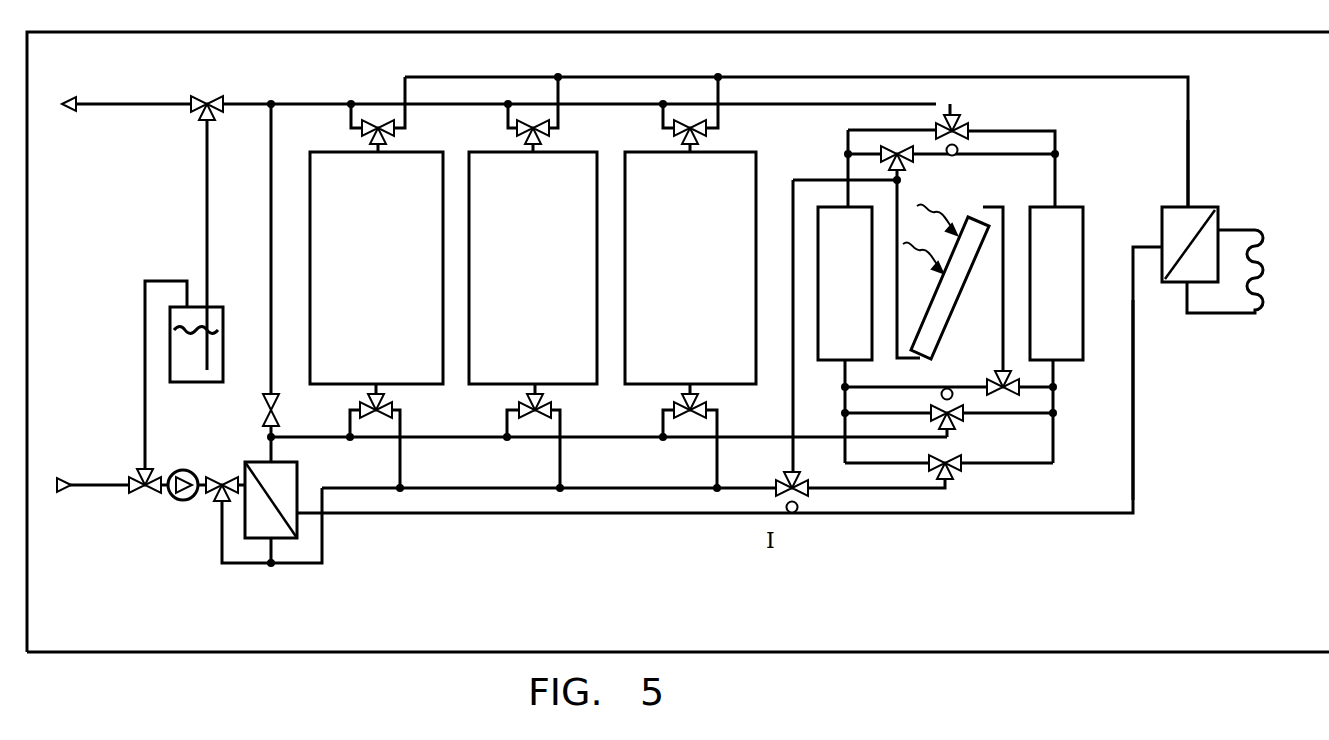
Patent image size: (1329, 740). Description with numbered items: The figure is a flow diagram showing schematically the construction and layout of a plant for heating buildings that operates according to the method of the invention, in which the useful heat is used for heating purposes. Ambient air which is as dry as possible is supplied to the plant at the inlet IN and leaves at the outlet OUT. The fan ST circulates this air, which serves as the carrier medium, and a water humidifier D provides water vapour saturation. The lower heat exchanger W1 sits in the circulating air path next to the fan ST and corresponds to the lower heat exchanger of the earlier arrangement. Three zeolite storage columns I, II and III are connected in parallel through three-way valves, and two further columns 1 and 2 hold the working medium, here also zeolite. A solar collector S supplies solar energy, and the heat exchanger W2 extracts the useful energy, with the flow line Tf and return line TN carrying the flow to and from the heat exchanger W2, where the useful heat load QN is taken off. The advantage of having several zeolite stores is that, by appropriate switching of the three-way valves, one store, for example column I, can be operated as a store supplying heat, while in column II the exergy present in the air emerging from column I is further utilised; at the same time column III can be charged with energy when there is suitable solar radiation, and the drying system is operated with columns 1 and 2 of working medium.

The air outlet OUT is at (100, 114).
The air inlet IN is at (81, 497).
The zeolite storage column I is at (376, 268).
The zeolite storage column II is at (533, 268).
The zeolite storage column III is at (690, 268).
The working medium column 1 is at (845, 283).
The working medium column 2 is at (1056, 283).
The solar collector S is at (947, 332).
The water humidifier D is at (224, 356).
The fan ST is at (183, 500).
The lower heat exchanger W1 is at (309, 452).
The heat exchanger W2 is at (1218, 222).
The flow temperature line Tf is at (1203, 163).
The return temperature line TN is at (1151, 400).
The useful heat load QN is at (1245, 271).